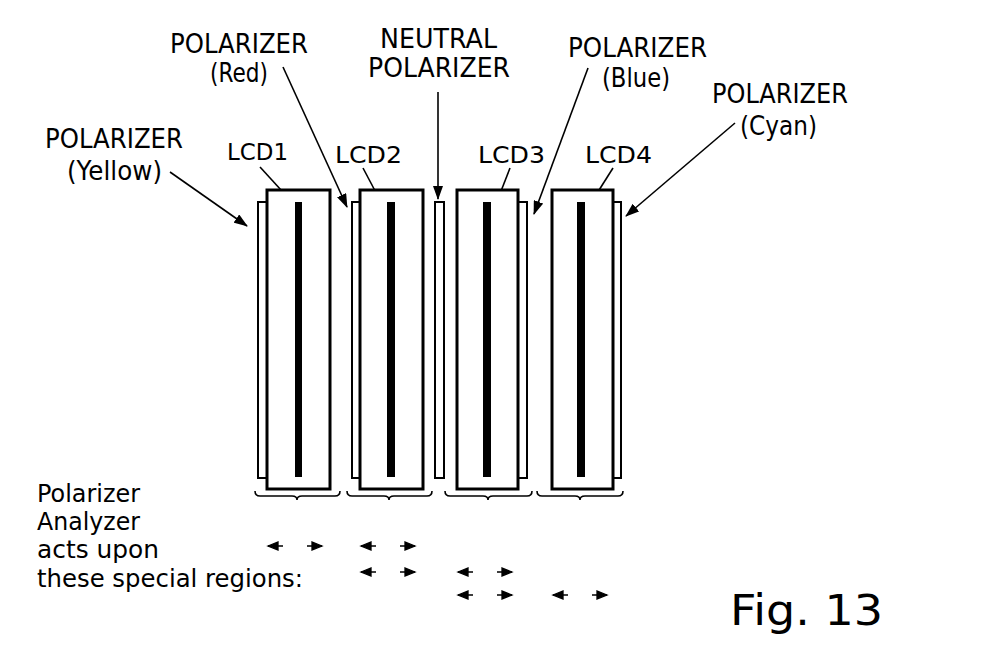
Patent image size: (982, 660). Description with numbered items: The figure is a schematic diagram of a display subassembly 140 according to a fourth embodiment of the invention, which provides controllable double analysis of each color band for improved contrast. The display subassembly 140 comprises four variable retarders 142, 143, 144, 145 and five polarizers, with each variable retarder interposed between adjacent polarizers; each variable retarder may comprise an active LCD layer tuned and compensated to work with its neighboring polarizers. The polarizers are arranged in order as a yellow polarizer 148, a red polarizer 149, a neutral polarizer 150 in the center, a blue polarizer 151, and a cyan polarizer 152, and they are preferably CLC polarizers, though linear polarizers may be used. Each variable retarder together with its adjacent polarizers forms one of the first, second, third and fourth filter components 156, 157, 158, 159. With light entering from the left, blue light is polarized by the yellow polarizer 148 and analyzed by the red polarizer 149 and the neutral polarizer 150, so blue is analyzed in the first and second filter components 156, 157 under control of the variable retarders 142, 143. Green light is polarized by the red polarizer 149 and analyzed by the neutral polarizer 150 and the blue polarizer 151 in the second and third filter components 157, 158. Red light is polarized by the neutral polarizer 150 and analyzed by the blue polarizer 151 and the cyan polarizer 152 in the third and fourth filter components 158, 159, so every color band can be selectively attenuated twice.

The display subassembly 140 is at (663, 476).
The variable retarder 142 is at (308, 190).
The variable retarder 143 is at (418, 190).
The variable retarder 144 is at (463, 190).
The variable retarder 145 is at (563, 190).
The yellow polarizer 148 is at (258, 408).
The red polarizer 149 is at (352, 445).
The neutral polarizer 150 is at (437, 478).
The blue polarizer 151 is at (527, 447).
The cyan polarizer 152 is at (621, 268).
The first filter component 156 is at (297, 525).
The second filter component 157 is at (389, 538).
The third filter component 158 is at (488, 549).
The fourth filter component 159 is at (580, 549).